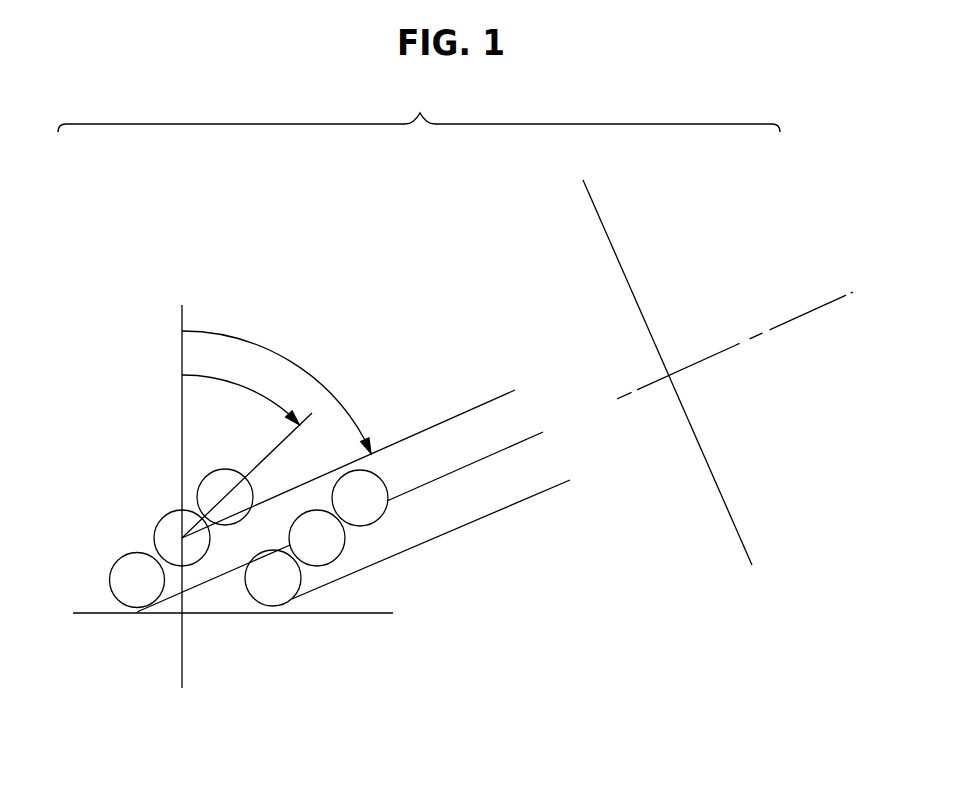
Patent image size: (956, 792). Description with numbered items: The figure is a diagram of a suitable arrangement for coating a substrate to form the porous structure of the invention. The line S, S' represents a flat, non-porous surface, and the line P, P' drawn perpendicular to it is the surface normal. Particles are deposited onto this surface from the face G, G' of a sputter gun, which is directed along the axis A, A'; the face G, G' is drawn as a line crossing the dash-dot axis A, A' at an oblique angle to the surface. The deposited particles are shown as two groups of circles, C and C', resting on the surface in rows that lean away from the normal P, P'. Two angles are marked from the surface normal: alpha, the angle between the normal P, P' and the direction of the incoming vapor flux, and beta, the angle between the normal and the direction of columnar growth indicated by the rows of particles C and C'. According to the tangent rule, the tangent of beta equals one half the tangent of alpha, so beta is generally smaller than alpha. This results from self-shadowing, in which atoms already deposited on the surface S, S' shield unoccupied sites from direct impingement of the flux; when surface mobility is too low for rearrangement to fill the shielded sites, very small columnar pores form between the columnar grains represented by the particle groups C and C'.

The surface normal P is at (179, 631).
The surface normal P' is at (176, 403).
The flat non-porous surface S is at (145, 614).
The flat non-porous surface S' is at (330, 608).
The sputter gun face G is at (613, 267).
The sputter gun face G' is at (715, 491).
The sputter gun axis A is at (660, 385).
The sputter gun axis A' is at (806, 308).
The deposited particles C is at (181, 538).
The deposited particles C' is at (346, 538).